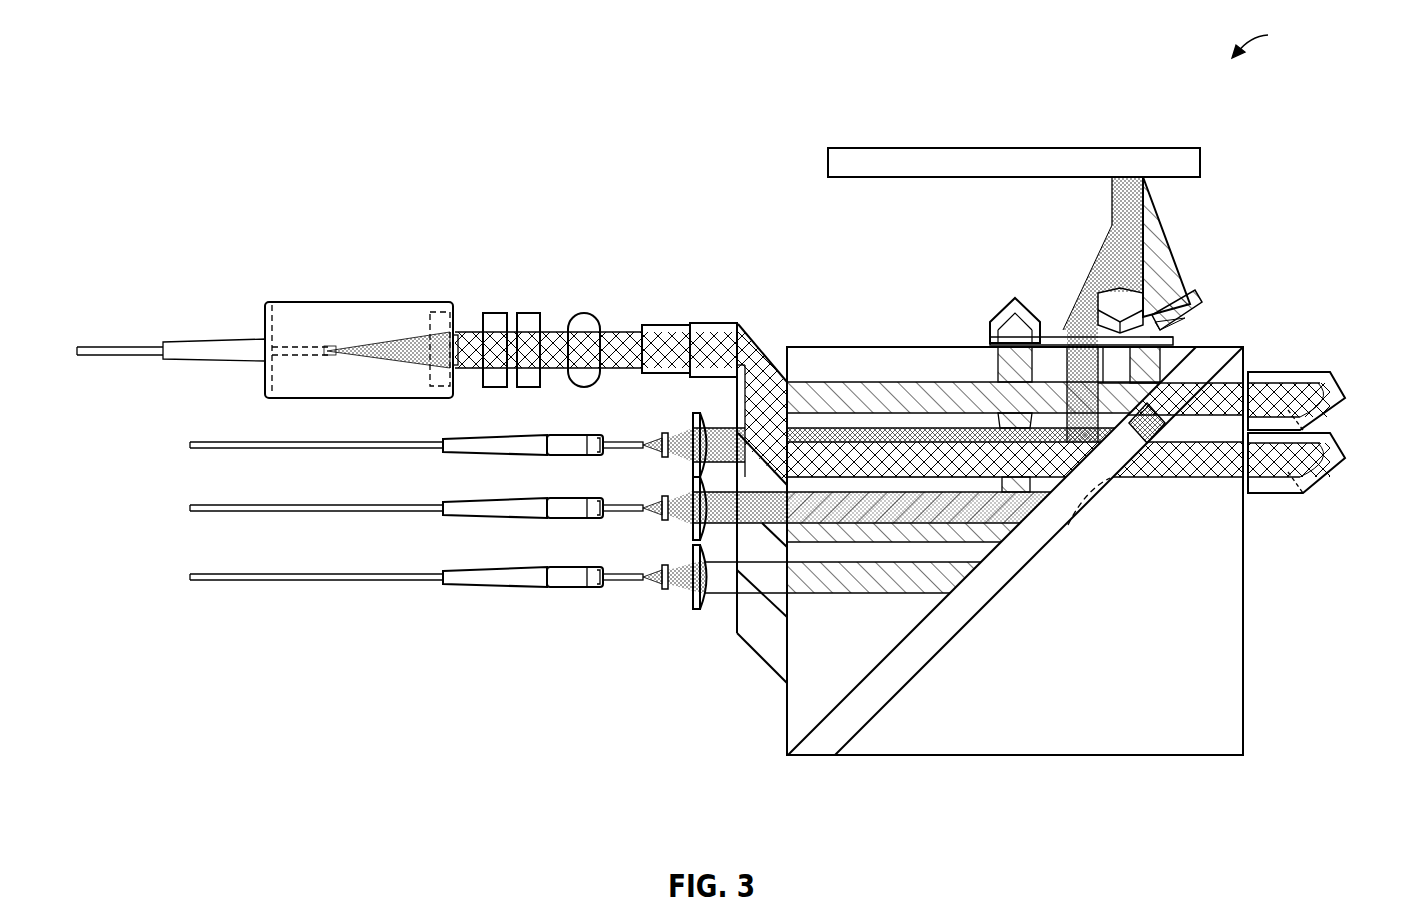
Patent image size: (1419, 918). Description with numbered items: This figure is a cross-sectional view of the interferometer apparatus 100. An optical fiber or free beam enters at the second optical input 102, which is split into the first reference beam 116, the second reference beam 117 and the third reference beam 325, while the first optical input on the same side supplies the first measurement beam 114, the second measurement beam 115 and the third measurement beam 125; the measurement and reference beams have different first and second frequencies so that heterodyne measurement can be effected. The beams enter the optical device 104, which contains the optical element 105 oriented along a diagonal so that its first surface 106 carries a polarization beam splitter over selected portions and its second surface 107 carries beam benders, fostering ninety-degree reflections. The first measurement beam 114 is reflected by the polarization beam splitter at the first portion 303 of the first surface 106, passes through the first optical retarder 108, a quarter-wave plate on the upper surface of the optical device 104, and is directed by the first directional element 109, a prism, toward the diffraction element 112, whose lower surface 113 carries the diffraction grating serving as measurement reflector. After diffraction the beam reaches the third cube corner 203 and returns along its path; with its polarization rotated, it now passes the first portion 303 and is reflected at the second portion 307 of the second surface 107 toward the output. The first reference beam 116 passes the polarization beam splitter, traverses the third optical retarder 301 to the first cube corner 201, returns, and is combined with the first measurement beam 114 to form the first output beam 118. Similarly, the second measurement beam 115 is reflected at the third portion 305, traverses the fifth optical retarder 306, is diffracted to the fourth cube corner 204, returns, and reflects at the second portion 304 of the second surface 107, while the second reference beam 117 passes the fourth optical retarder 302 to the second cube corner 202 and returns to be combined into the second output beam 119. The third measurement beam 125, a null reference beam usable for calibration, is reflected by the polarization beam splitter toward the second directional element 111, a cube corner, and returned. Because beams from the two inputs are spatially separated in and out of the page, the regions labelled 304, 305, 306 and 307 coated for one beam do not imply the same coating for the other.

The apparatus 100 is at (1271, 41).
The second optical input 102 is at (346, 302).
The optical device 104 is at (1243, 735).
The optical element 105 is at (800, 758).
The first surface 106 is at (786, 735).
The second surface 107 is at (855, 756).
The first optical retarder 108 is at (1057, 338).
The first directional element 109 is at (1087, 307).
The second directional element 111 is at (1012, 308).
The diffraction element 112 is at (1163, 148).
The lower surface 113 is at (908, 178).
The first measurement beam 114 is at (1063, 352).
The second measurement beam 115 is at (880, 400).
The first reference beam 116 is at (1200, 462).
The second reference beam 117 is at (1237, 340).
The first output beam 118 is at (885, 503).
The second output beam 119 is at (848, 435).
The third measurement beam 125 is at (917, 536).
The first cube corner 201 is at (1340, 470).
The second cube corner 202 is at (1347, 393).
The third cube corner 203 is at (1112, 267).
The fourth cube corner 204 is at (1225, 275).
The third optical retarder 301 is at (1248, 520).
The fourth optical retarder 302 is at (1247, 358).
The first portion 303 is at (1103, 478).
The second portion of second surface 304 is at (1167, 437).
The third portion 305 is at (1225, 365).
The fifth optical retarder 306 is at (1187, 340).
The second portion 307 is at (1095, 512).
The third reference beam 325 is at (908, 578).